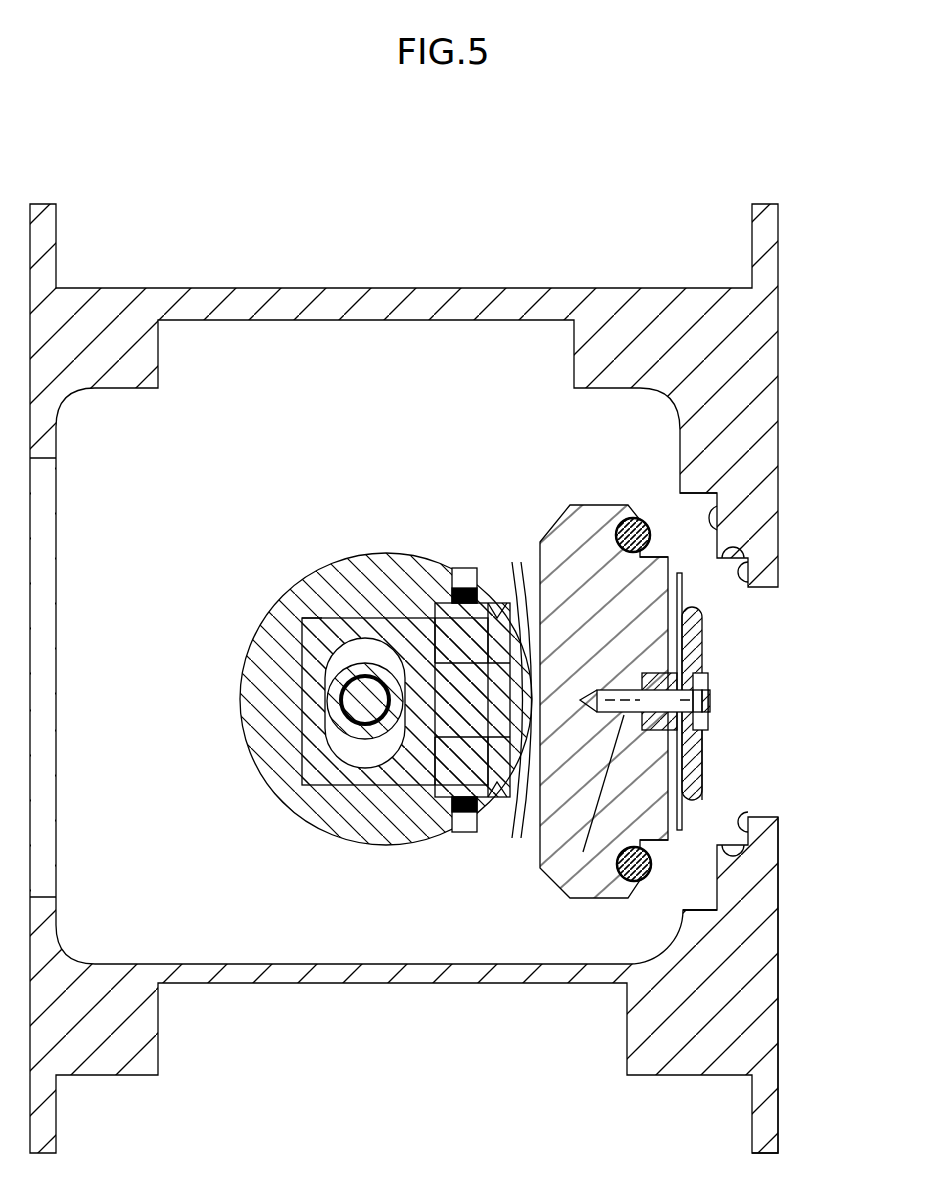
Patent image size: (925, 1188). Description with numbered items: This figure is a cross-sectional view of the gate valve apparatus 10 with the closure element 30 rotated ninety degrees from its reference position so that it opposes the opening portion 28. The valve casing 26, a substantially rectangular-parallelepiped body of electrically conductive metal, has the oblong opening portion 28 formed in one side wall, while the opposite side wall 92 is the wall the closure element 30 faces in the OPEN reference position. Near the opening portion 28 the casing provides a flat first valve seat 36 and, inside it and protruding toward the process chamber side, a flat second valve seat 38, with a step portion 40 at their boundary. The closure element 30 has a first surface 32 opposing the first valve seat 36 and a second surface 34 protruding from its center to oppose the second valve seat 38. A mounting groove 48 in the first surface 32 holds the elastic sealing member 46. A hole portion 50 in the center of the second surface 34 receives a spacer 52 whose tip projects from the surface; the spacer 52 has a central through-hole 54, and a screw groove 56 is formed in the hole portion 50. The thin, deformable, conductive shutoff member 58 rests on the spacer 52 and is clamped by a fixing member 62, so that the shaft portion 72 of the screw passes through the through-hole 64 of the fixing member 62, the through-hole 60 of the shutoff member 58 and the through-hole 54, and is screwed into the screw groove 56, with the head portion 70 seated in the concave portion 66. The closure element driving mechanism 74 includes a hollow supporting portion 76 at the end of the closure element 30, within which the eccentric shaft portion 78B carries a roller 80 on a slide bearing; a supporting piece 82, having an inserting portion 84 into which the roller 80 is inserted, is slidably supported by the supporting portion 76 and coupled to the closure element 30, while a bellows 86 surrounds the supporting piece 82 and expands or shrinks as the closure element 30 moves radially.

The gate valve apparatus 10 is at (388, 1030).
The valve casing 26 is at (764, 884).
The opening portion 28 is at (790, 734).
The closure element 30 is at (562, 506).
The first surface 32 is at (655, 567).
The second surface 34 is at (702, 774).
The first valve seat 36 is at (720, 516).
The second valve seat 38 is at (750, 572).
The step portion 40 is at (738, 552).
The sealing member 46 is at (744, 498).
The mounting groove 48 is at (638, 517).
The hole portion 50 is at (640, 690).
The spacer 52 is at (703, 690).
The through-hole 54 is at (584, 856).
The screw groove 56 is at (563, 628).
The shutoff member 58 is at (684, 596).
The through-hole 60 is at (710, 722).
The fixing member 62 is at (702, 624).
The through-hole 64 is at (710, 700).
The concave portion 66 is at (708, 695).
The head portion 70 is at (712, 705).
The shaft portion 72 is at (622, 715).
The closure element driving mechanism 74 is at (266, 806).
The supporting portion 76 is at (242, 742).
The eccentric shaft portion 78B is at (340, 688).
The roller 80 is at (364, 657).
The supporting piece 82 is at (472, 708).
The inserting portion 84 is at (323, 626).
The bellows 86 is at (466, 570).
The side wall 92 is at (470, 285).